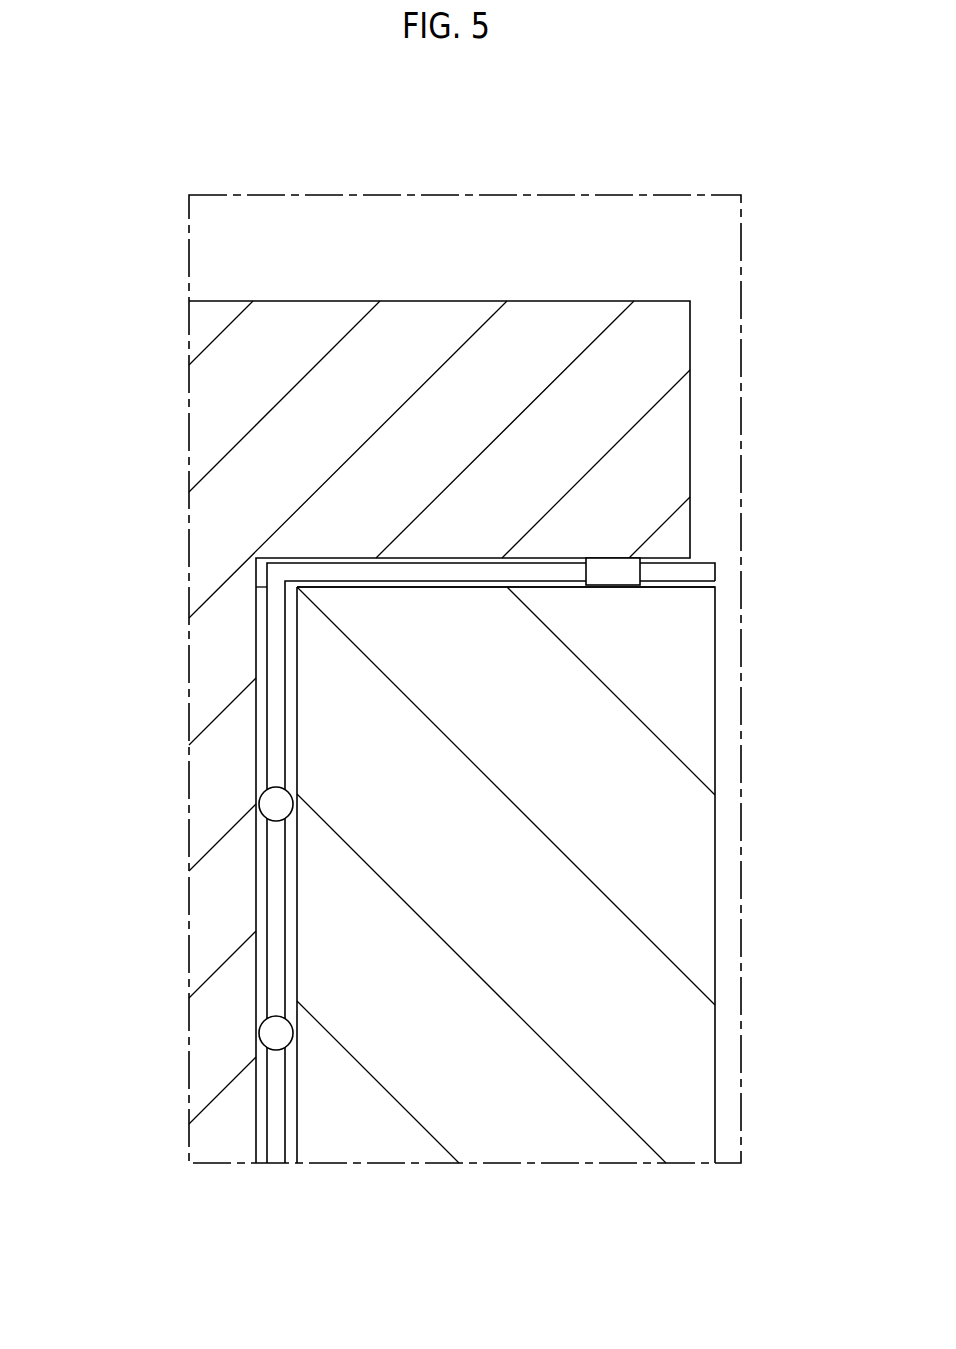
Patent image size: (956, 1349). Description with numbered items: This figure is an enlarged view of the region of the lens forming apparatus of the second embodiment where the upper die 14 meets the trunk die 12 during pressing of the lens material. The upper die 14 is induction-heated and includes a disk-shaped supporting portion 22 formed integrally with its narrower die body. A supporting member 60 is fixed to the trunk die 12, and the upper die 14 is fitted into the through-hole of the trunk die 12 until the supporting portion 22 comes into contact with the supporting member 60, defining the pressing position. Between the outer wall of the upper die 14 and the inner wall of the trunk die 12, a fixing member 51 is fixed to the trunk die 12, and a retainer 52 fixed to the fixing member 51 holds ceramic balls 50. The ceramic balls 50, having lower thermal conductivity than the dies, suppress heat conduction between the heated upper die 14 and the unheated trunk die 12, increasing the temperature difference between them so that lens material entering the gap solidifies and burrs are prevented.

The trunk die 12 is at (699, 866).
The upper die 14 is at (489, 729).
The supporting portion 22 is at (662, 458).
The ceramic balls 50 is at (273, 805).
The fixing member 51 is at (465, 584).
The retainer 52 is at (278, 713).
The supporting member 60 is at (618, 574).